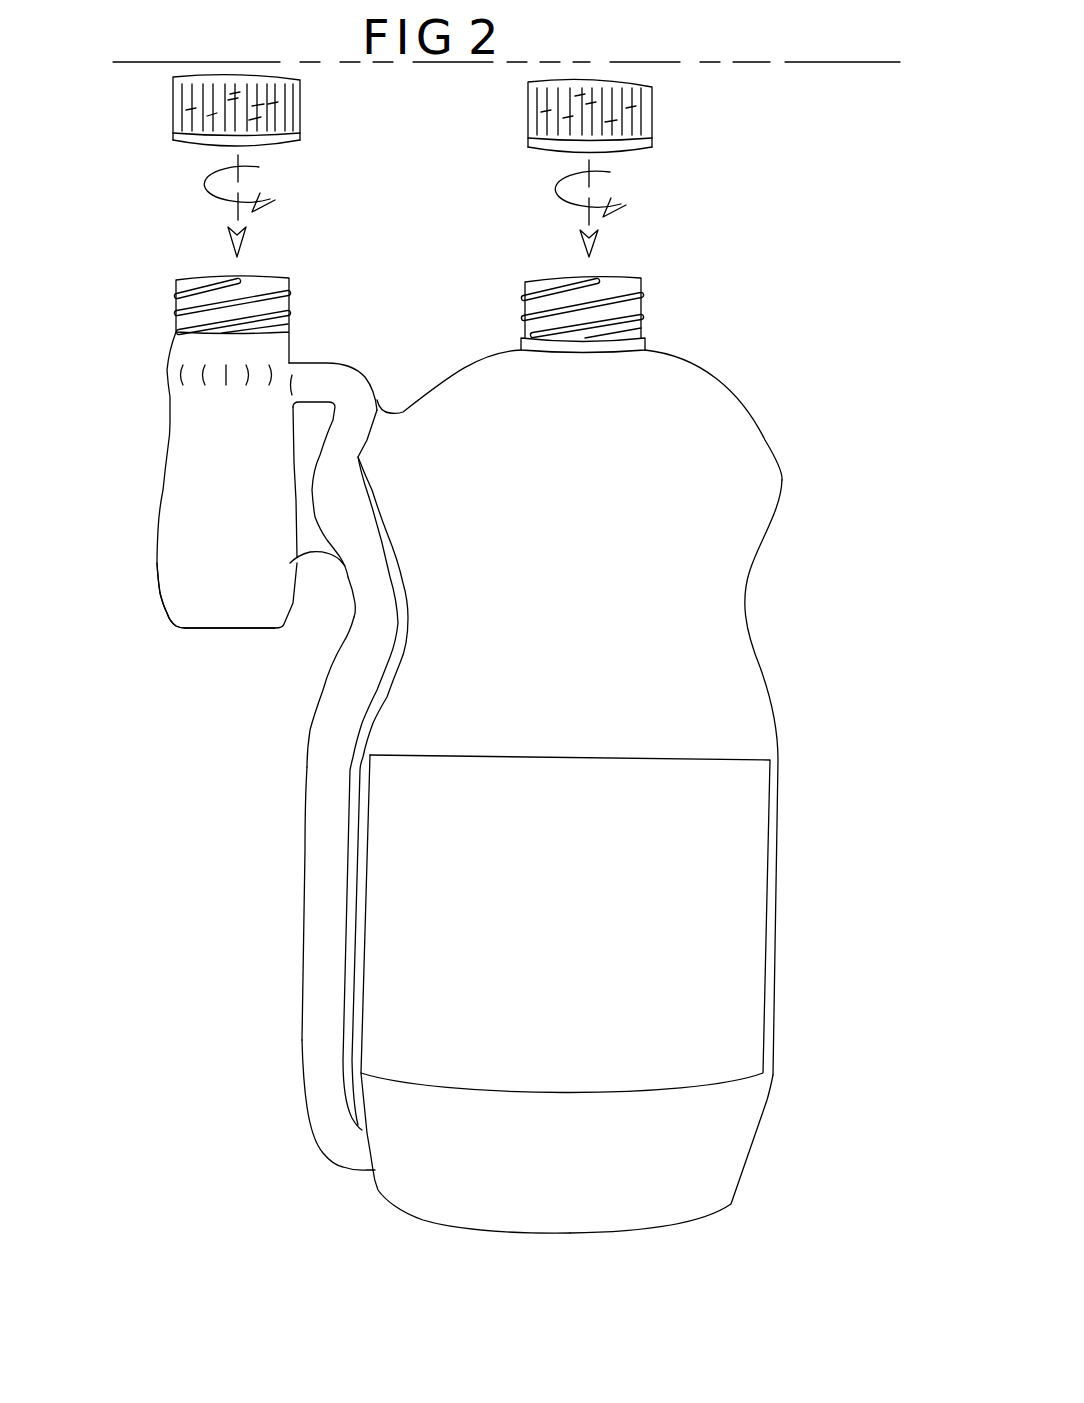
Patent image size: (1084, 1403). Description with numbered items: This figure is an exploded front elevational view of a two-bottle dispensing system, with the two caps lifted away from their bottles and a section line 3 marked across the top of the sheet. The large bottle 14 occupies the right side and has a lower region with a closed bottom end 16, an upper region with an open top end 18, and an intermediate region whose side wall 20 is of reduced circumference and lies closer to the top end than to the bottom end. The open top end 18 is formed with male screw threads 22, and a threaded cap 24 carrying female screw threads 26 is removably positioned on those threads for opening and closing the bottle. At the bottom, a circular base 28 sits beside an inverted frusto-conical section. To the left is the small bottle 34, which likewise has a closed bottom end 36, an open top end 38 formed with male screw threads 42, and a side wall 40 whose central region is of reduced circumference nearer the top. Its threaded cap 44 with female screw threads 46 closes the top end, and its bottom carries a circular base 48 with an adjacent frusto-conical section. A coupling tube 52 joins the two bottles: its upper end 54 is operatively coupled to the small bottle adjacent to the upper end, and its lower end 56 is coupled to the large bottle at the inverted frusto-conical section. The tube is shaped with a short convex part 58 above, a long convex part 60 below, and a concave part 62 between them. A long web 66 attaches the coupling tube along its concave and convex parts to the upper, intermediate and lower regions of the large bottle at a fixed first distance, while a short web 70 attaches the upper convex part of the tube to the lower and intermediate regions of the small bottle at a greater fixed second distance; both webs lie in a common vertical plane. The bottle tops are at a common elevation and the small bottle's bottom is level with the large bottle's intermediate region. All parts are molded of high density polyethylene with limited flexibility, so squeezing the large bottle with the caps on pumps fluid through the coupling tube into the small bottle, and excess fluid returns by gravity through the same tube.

The section line 3- 3 is at (157, 110).
The large bottle 14 is at (626, 594).
The closed bottom end 16 is at (733, 1204).
The open top end 18 is at (743, 405).
The side wall 20 is at (780, 740).
The male screw threads 22 is at (631, 315).
The threaded cap 24 is at (652, 113).
The female screw threads 26 is at (612, 142).
The circular base 28 is at (413, 1188).
The small bottle 34 is at (267, 478).
The closed bottom end 36 is at (207, 632).
The open top end 38 is at (270, 275).
The side wall 40 is at (168, 447).
The male screw threads 42 is at (188, 309).
The threaded cap 44 is at (310, 108).
The female screw threads 46 is at (273, 133).
The circular base 48 is at (170, 622).
The coupling tube 52 is at (321, 900).
The upper end 54 is at (363, 378).
The lower end 56 is at (325, 1157).
The short convex part 58 is at (350, 543).
The long convex part 60 is at (301, 1021).
The concave part 62 is at (357, 613).
The long web 66 is at (383, 550).
The short web 70 is at (307, 418).